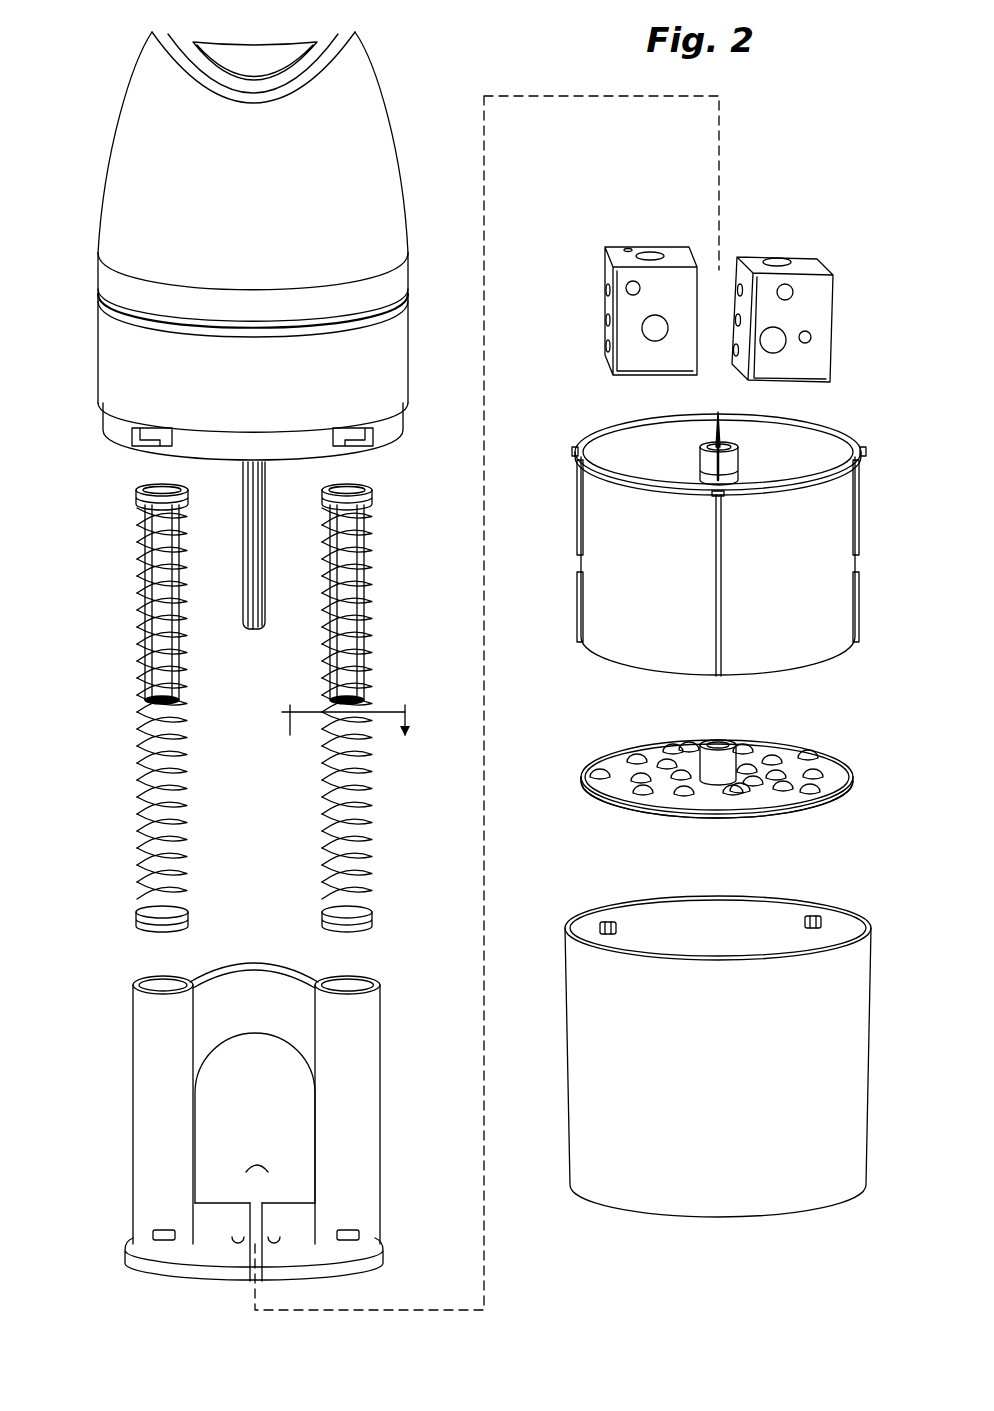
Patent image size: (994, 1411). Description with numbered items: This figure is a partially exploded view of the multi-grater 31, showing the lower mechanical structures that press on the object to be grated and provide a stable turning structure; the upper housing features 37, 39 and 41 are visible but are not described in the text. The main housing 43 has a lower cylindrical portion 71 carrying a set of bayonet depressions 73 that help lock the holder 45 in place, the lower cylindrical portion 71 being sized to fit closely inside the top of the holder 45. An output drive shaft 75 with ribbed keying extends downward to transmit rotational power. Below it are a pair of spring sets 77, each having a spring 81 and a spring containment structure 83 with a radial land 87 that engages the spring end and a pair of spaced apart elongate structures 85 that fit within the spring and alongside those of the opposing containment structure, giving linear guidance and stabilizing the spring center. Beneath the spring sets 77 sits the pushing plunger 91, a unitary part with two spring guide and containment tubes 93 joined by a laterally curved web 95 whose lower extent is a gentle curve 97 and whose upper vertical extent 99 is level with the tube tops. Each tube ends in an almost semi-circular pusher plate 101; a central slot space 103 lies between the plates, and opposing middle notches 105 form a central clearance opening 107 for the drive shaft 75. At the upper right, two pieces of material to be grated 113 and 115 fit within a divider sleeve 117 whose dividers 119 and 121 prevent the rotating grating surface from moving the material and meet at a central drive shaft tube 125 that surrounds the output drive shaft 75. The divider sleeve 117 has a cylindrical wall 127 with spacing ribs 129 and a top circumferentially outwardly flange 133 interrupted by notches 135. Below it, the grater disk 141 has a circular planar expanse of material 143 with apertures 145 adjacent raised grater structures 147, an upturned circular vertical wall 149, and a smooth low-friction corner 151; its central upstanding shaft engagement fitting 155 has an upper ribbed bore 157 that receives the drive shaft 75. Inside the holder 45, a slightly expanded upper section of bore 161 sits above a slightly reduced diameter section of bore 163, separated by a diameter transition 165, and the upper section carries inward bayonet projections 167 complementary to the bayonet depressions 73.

The multi-grater 31 is at (397, 92).
The hood 37 is at (392, 180).
The recess 39 is at (263, 46).
The band 41 is at (410, 297).
The main housing 43 is at (409, 358).
The holder 45 is at (568, 1060).
The lower cylindrical portion 71 is at (396, 428).
The bayonet depressions 73 is at (137, 452).
The output drive shaft 75 is at (256, 632).
The spring sets 77 is at (121, 610).
The spring 81 is at (372, 603).
The spring containment structure 83 is at (319, 587).
The elongate structures 85 is at (323, 627).
The radial land 87 is at (190, 493).
The pushing plunger 91 is at (404, 1047).
The spring guide and containment tubes 93 is at (131, 1082).
The web 95 is at (254, 1057).
The gentle curve 97 is at (253, 1036).
The upper vertical extent 99 is at (234, 972).
The almost semi-circular pusher plate 101 is at (190, 1254).
The central slot space 103 is at (257, 1162).
The middle notch 105 is at (240, 1237).
The central clearance opening 107 is at (253, 1285).
The material to be grated 113 is at (608, 255).
The material to be grated 115 is at (822, 260).
The divider sleeve 117 is at (575, 552).
The divider 119 is at (741, 462).
The divider 121 is at (715, 430).
The central drive shaft tube 125 is at (695, 462).
The cylindrical wall 127 is at (628, 575).
The spacing ribs 129 is at (578, 612).
The circumferentially outwardly flange 133 is at (600, 478).
The notches 135 is at (573, 451).
The grater disk 141 is at (568, 777).
The circular planar expanse of material 143 is at (773, 758).
The apertures 145 is at (598, 782).
The raised grater structures 147 is at (600, 775).
The circular vertical wall 149 is at (836, 767).
The corner 151 is at (822, 796).
The upstanding shaft engagement fitting 155 is at (736, 750).
The upper ribbed bore 157 is at (716, 744).
The slightly expanded internal diameter upper section of bore 161 is at (750, 915).
The slightly reduced diameter section of bore 163 is at (700, 955).
The diameter transition 165 is at (846, 950).
The bayonet projections 167 is at (608, 920).